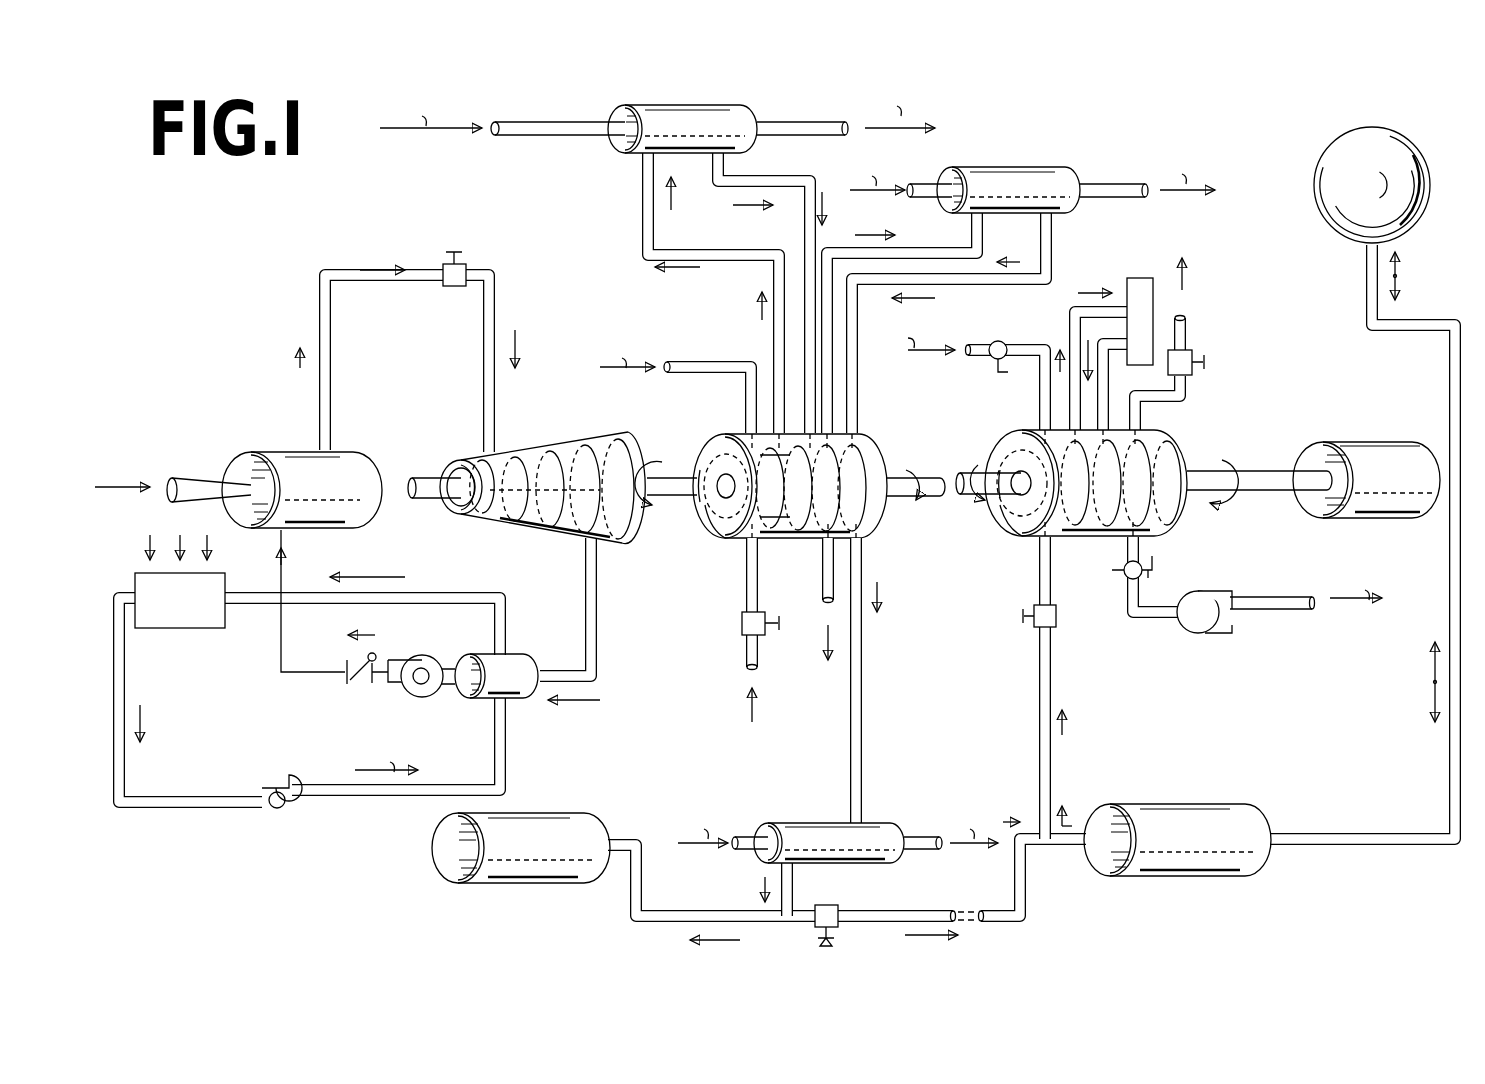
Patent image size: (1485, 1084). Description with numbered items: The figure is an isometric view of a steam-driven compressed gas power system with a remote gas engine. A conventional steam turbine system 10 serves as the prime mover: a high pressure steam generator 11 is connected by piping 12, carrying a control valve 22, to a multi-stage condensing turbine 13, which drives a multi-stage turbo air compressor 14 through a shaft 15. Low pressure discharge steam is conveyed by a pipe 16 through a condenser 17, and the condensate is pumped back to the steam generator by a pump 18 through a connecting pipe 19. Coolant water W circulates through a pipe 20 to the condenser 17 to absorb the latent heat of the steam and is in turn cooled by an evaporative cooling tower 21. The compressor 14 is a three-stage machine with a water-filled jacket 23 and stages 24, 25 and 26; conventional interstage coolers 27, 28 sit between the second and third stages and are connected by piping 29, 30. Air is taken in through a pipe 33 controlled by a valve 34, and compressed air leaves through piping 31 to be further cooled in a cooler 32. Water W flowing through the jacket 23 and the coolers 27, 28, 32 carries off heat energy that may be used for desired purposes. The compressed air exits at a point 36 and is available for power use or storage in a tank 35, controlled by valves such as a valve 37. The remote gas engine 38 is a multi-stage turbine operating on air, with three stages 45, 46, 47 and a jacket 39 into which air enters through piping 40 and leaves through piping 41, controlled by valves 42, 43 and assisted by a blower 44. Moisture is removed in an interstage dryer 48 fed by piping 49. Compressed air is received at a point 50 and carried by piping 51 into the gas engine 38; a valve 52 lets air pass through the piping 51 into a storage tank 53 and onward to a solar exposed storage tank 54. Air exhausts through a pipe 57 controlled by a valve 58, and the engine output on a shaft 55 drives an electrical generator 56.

The steam turbine system 10 is at (418, 828).
The high pressure steam generator 11 is at (292, 448).
The piping 12 is at (320, 318).
The multi-stage condensing turbine 13 is at (560, 446).
The multi-stage turbo air compressor 14 is at (712, 520).
The shaft 15 is at (662, 462).
The pipe 16 is at (600, 640).
The condenser 17 is at (524, 655).
The pump 18 is at (418, 658).
The connecting pipe 19 is at (281, 637).
The pipe 20 is at (505, 772).
The evaporative cooling tower 21 is at (180, 628).
The valve 22 is at (462, 270).
The jacket 23 is at (722, 540).
The first compressor stage 24 is at (740, 448).
The second compressor stage 25 is at (802, 520).
The third compressor stage 26 is at (878, 452).
The interstage cooler 27 is at (672, 122).
The interstage cooler 28 is at (1004, 182).
The piping 29 is at (728, 172).
The piping 30 is at (980, 256).
The piping 31 is at (858, 760).
The cooler 32 is at (815, 824).
The pipe 33 is at (745, 655).
The valve 34 is at (742, 621).
The storage tank 35 is at (524, 868).
The compressed air exit point 36 is at (875, 912).
The valve 37 is at (826, 905).
The gas engine 38 is at (1005, 512).
The jacket 39 is at (1025, 522).
The piping 40 is at (1007, 342).
The piping 41 is at (1140, 620).
The valve 42 is at (1126, 572).
The valve 43 is at (982, 360).
The blower 44 is at (1216, 628).
The first gas engine stage 45 is at (1030, 450).
The second gas engine stage 46 is at (1100, 522).
The third gas engine stage 47 is at (1160, 455).
The interstage dryer 48 is at (1140, 280).
The piping 49 is at (1104, 383).
The compressed air inlet point 50 is at (948, 912).
The piping 51 is at (1370, 272).
The valve 52 is at (1036, 620).
The storage tank 53 is at (1180, 806).
The solar exposed storage tank 54 is at (1362, 148).
The shaft 55 is at (1196, 472).
The electrical generator 56 is at (1376, 450).
The pipe 57 is at (1190, 386).
The valve 58 is at (1186, 333).